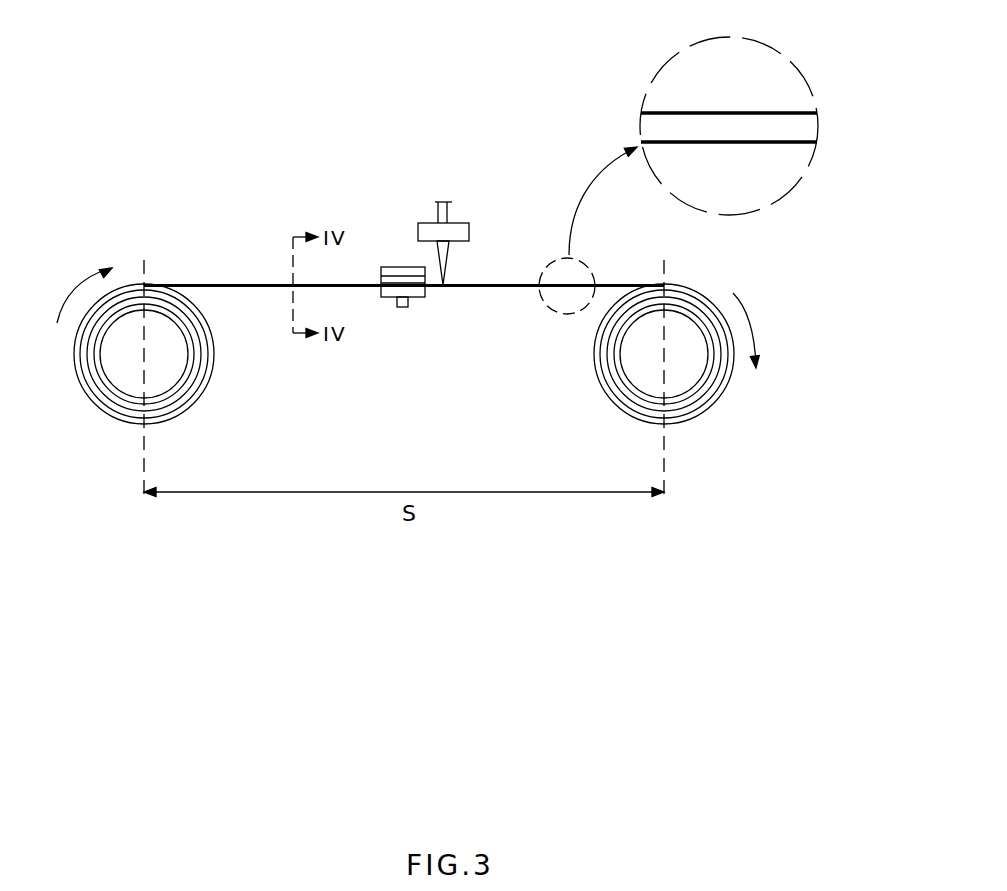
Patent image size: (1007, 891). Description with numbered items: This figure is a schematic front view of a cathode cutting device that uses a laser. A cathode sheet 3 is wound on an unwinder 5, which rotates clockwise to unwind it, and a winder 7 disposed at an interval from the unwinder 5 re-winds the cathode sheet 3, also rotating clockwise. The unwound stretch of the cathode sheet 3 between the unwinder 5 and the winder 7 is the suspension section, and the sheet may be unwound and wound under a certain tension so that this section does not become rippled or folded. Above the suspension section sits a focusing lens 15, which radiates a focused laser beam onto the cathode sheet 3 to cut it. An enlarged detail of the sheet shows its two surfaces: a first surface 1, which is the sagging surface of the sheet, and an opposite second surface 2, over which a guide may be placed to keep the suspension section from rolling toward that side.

The first surface 1 is at (728, 142).
The second surface 2 is at (728, 113).
The cathode sheet 3 is at (239, 282).
The unwinder 5 is at (162, 386).
The winder 7 is at (677, 386).
The focusing lens 15 is at (469, 231).